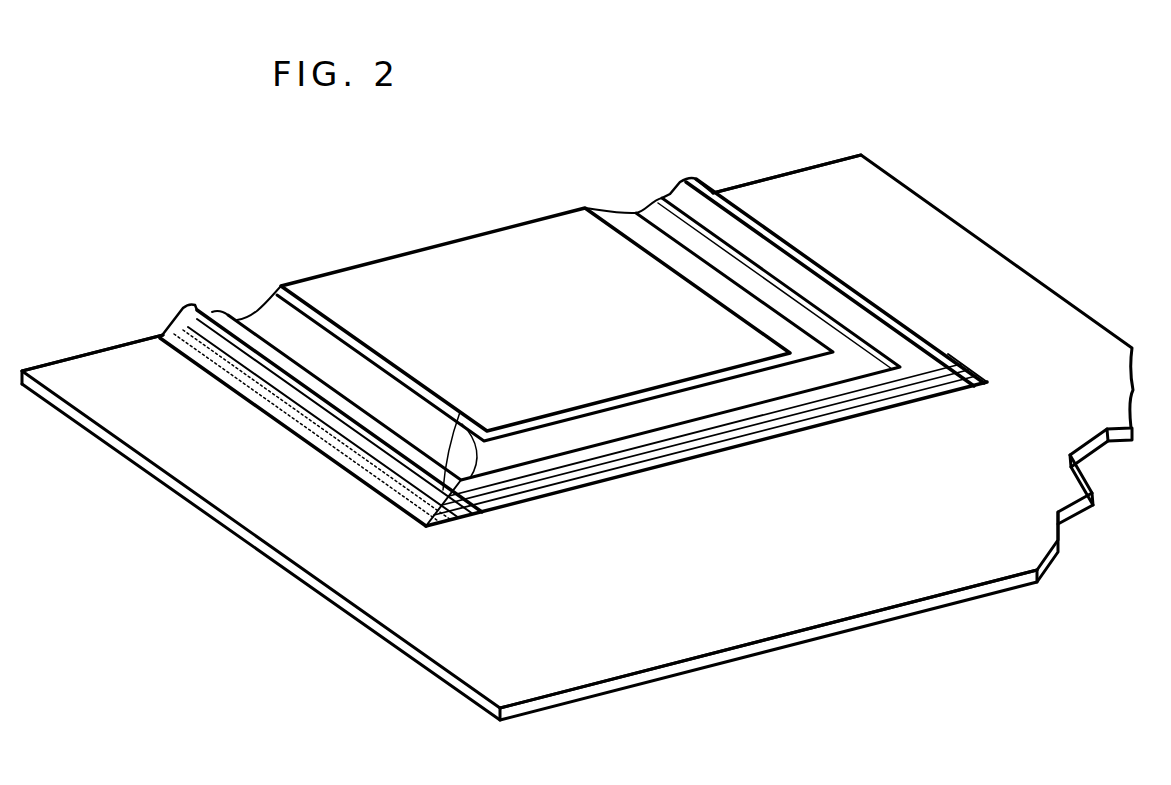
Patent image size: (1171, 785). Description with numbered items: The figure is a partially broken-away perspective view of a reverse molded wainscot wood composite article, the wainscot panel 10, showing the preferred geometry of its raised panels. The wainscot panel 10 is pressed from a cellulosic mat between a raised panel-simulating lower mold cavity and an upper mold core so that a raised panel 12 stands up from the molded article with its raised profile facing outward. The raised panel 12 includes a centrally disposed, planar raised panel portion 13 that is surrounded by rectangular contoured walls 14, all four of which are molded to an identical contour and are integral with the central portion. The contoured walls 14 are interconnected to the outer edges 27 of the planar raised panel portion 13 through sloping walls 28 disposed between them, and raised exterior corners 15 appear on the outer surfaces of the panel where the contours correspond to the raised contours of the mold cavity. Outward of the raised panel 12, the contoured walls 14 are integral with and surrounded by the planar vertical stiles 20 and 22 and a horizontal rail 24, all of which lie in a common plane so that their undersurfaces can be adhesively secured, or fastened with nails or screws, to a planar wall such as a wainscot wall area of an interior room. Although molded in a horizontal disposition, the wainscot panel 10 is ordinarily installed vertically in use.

The wainscot panel 10 is at (883, 153).
The raised panel 12 is at (592, 336).
The planar raised panel portion 13 is at (553, 314).
The contoured walls 14 is at (720, 191).
The raised exterior corners 15 is at (907, 368).
The planar vertical stile 20 is at (331, 524).
The planar vertical stile 22 is at (921, 262).
The horizontal rail 24 is at (764, 539).
The outer edges of the planar panel portion 27 is at (633, 232).
The sloping walls 28 is at (675, 258).